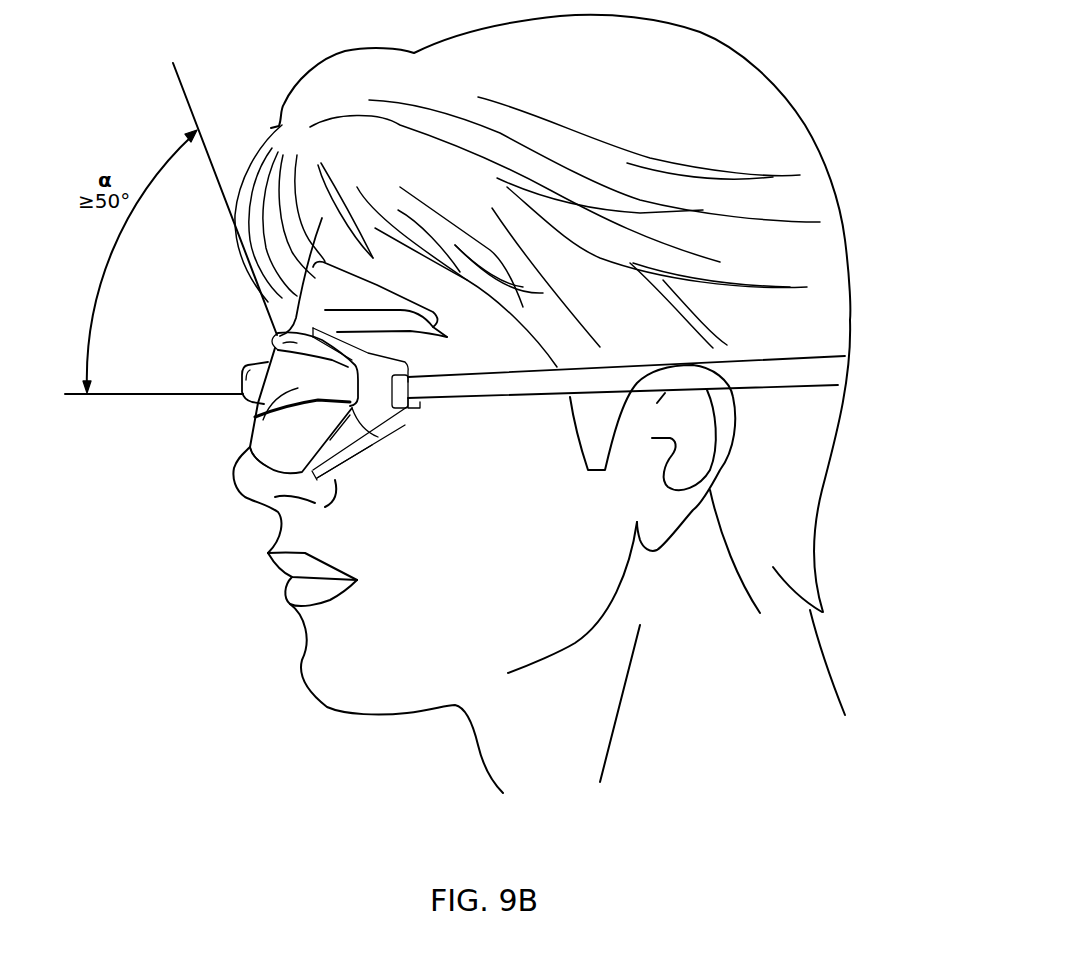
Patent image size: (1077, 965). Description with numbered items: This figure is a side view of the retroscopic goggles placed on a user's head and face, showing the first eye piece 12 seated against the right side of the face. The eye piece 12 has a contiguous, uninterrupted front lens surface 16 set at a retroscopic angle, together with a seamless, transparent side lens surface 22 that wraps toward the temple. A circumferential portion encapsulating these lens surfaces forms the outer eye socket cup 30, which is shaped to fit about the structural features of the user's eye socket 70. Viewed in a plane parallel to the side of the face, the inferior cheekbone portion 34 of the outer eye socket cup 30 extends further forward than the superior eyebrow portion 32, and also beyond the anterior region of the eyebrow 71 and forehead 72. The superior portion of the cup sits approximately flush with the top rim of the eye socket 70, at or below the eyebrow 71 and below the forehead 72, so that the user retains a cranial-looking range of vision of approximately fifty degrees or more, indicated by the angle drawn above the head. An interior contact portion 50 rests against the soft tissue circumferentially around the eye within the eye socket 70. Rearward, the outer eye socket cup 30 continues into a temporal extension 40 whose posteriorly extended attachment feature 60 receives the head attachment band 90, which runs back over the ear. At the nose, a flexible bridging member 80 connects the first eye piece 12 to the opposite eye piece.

The first eye piece 12 is at (165, 430).
The front lens surface 16 is at (257, 413).
The side lens surface 22 is at (262, 400).
The outer eye socket cup 30 is at (384, 287).
The superior eyebrow portion 32 is at (273, 343).
The inferior cheekbone portion 34 is at (240, 456).
The temporal extension 40 is at (393, 398).
The interior contact portion 50 is at (340, 340).
The posteriorly extended attachment feature 60 is at (417, 408).
The eye socket 70 is at (384, 455).
The eyebrow 71 is at (410, 318).
The forehead 72 is at (290, 309).
The flexible bridging member 80 is at (243, 382).
The head attachment band 90 is at (517, 388).